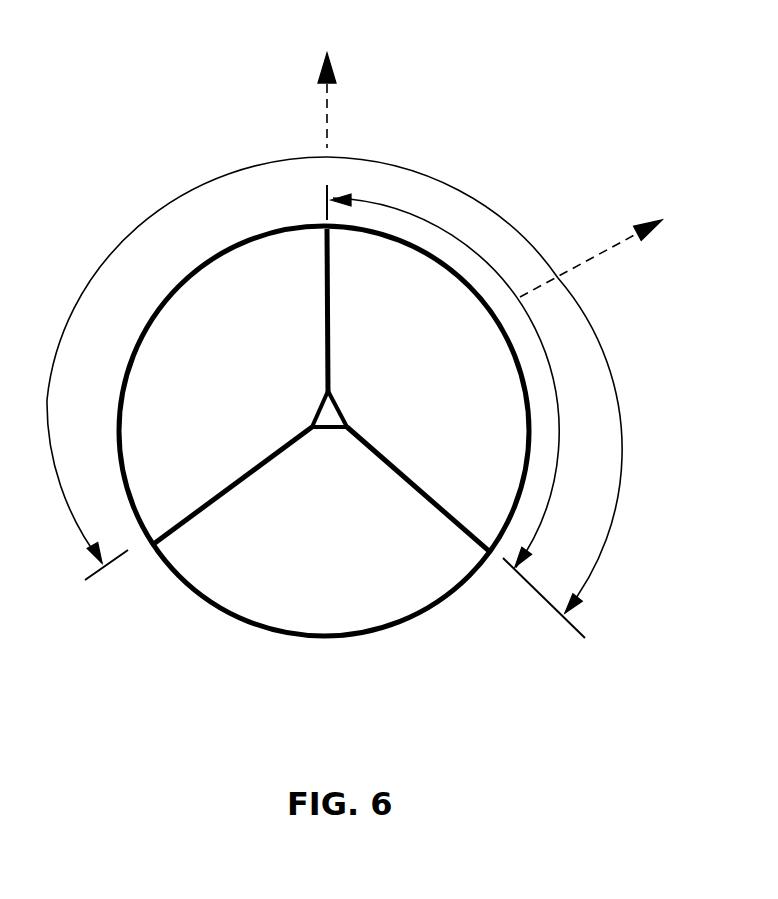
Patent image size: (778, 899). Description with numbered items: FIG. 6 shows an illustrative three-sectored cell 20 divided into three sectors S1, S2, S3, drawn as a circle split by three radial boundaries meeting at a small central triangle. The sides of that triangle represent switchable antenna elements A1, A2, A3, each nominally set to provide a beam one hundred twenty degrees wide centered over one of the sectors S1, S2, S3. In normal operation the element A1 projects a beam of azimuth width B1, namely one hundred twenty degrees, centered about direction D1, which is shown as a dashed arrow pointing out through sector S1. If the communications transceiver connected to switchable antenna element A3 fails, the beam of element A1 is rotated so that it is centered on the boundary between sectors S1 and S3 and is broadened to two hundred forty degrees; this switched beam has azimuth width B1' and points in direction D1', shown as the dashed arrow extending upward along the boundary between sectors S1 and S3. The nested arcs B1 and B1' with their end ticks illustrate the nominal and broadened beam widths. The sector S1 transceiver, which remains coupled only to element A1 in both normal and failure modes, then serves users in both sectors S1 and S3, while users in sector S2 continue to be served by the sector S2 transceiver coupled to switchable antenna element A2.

The disc / plate with three sectors 20 is at (183, 583).
The sector S1 is at (402, 310).
The sector S2 is at (414, 507).
The sector S3 is at (232, 443).
The switchable antenna element A1 is at (336, 405).
The switchable antenna element A2 is at (328, 429).
The switchable antenna element A3 is at (317, 409).
The azimuth width B1 is at (464, 376).
The azimuth width B1' is at (353, 397).
The direction D1 is at (607, 247).
The direction D1' is at (320, 77).